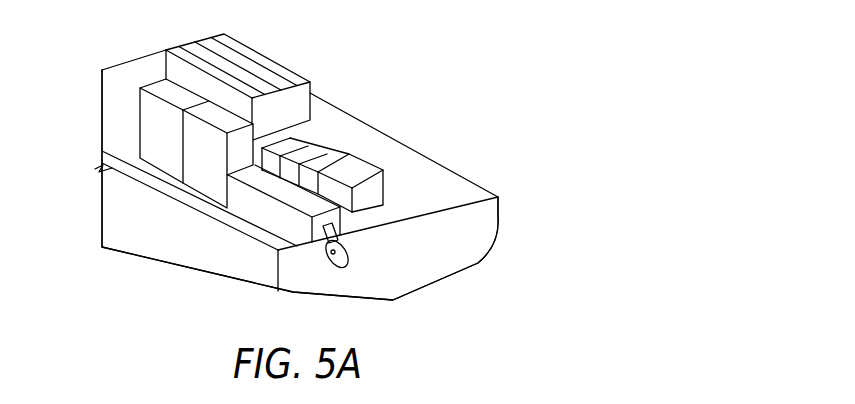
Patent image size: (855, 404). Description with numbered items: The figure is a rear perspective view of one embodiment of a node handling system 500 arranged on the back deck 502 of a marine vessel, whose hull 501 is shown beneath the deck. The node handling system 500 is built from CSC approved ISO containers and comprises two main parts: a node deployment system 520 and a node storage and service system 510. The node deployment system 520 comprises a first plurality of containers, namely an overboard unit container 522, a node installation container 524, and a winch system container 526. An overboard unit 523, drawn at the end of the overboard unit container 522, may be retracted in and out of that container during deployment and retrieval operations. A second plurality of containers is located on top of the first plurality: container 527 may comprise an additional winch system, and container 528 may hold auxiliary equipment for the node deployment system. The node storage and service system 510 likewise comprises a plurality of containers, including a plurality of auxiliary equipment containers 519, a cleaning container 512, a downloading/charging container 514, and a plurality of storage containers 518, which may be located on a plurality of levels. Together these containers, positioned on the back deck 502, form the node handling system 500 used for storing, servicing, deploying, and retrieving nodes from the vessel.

The node handling system 500 is at (483, 48).
The hull 501 is at (443, 243).
The back deck 502 is at (462, 192).
The node storage and service system 510 is at (306, 30).
The cleaning container 512 is at (332, 150).
The downloading/charging container 514 is at (303, 136).
The storage containers 518 is at (303, 99).
The auxiliary equipment containers 519 is at (363, 154).
The node deployment system 520 is at (126, 133).
The overboard unit container 522 is at (268, 216).
The overboard unit 523 is at (332, 268).
The node installation container 524 is at (205, 180).
The winch system container 526 is at (153, 153).
The container 527 is at (170, 95).
The container 528 is at (210, 116).